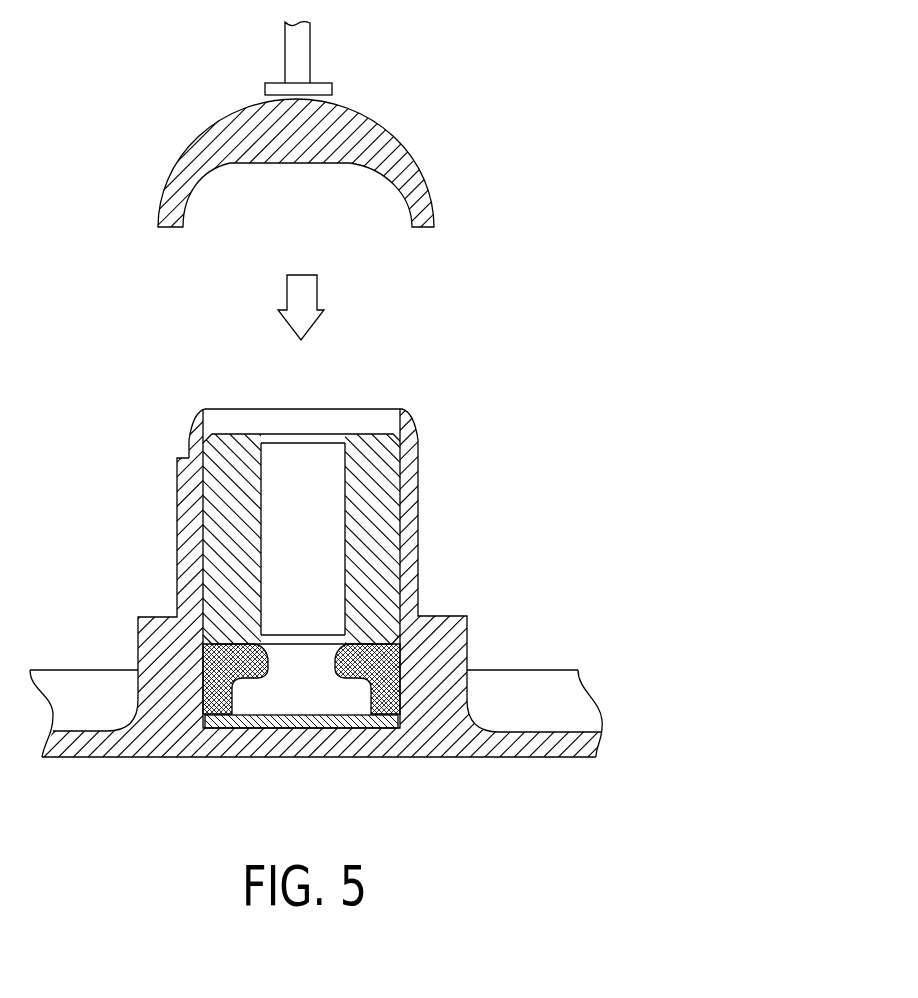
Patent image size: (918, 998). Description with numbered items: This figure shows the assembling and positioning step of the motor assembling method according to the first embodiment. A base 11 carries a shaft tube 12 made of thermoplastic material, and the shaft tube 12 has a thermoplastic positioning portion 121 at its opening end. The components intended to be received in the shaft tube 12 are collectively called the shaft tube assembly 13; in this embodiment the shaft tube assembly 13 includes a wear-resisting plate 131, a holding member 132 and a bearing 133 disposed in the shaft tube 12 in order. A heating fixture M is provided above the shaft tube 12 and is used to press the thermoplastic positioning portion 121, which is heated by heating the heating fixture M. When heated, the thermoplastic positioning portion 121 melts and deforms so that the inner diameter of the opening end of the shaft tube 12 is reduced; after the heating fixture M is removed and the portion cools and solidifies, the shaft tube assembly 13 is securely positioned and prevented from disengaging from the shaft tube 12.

The heating fixture M is at (232, 133).
The base 11 is at (538, 748).
The shaft tube 12 is at (322, 563).
The thermoplastic positioning portion 121 is at (197, 412).
The shaft tube assembly 13 is at (408, 581).
The wear-resisting plate 131 is at (402, 717).
The holding member 132 is at (398, 679).
The bearing 133 is at (383, 505).